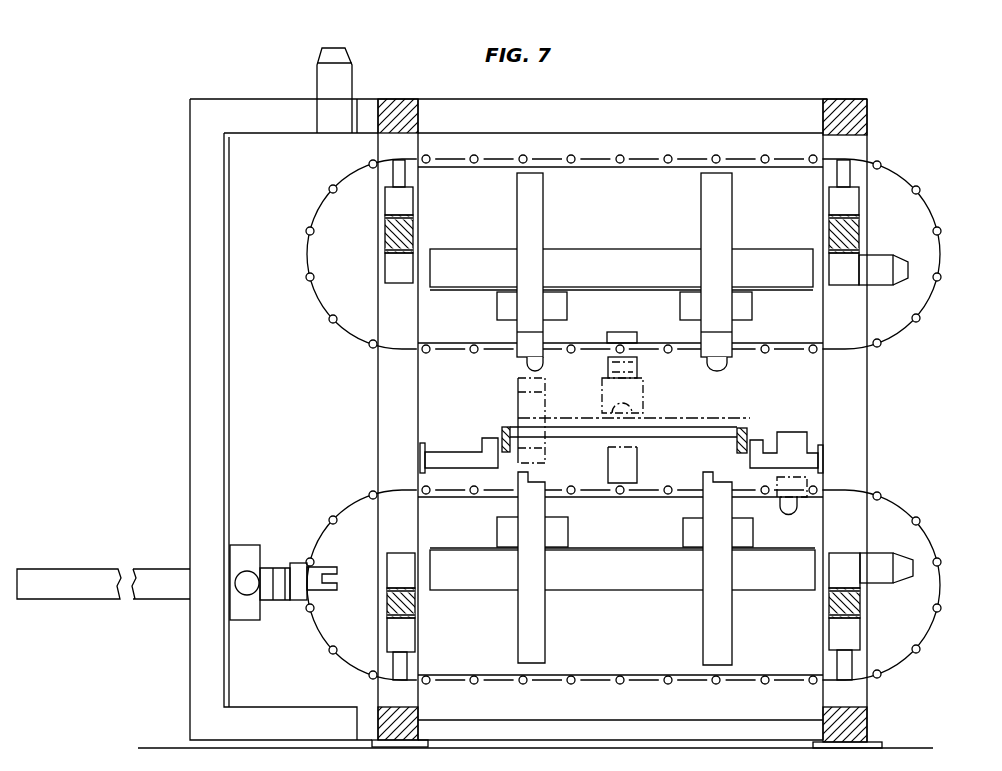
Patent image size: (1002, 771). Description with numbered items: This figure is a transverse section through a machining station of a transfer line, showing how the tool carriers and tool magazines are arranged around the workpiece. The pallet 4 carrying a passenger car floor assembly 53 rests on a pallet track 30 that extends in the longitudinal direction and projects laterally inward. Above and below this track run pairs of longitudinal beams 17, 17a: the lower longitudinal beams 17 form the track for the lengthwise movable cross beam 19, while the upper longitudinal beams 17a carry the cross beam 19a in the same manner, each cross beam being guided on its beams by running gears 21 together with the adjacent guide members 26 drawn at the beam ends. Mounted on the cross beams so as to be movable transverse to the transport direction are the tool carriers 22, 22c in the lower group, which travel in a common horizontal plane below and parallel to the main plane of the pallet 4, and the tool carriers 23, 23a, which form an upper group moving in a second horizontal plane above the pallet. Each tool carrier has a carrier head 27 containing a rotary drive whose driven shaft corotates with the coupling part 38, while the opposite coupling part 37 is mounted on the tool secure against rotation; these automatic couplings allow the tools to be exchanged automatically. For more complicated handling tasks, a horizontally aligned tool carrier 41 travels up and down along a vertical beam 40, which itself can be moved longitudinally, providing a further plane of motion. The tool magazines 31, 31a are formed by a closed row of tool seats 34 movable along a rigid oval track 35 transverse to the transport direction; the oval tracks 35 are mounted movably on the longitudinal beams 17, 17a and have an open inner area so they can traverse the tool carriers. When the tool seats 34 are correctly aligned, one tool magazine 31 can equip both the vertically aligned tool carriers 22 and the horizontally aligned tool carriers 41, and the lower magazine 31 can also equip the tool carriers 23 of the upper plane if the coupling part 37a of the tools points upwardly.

The pallet 4 is at (745, 440).
The lower longitudinal beam 17 is at (388, 602).
The upper longitudinal beam 17a is at (387, 237).
The cross beam 19 is at (467, 582).
The cross beam 19a is at (453, 275).
The running gear 21 is at (393, 275).
The tool carrier 22 is at (507, 505).
The tool carrier 22c is at (700, 499).
The tool carrier 23 is at (740, 332).
The tool carrier 23a is at (505, 330).
The bearing housing 26 is at (387, 212).
The carrier head 27 is at (710, 236).
The pallet track 30 is at (452, 456).
The tool magazine 31 is at (651, 589).
The tool magazine 31a is at (654, 246).
The tool seat 34 is at (893, 178).
The oval track 35 is at (785, 168).
The coupling part 37 is at (520, 392).
The coupling part 37a is at (800, 488).
The coupling part 38 is at (273, 600).
The vertical beam 40 is at (197, 404).
The tool carrier 41 is at (271, 558).
The passenger car floor assembly 53 is at (645, 418).